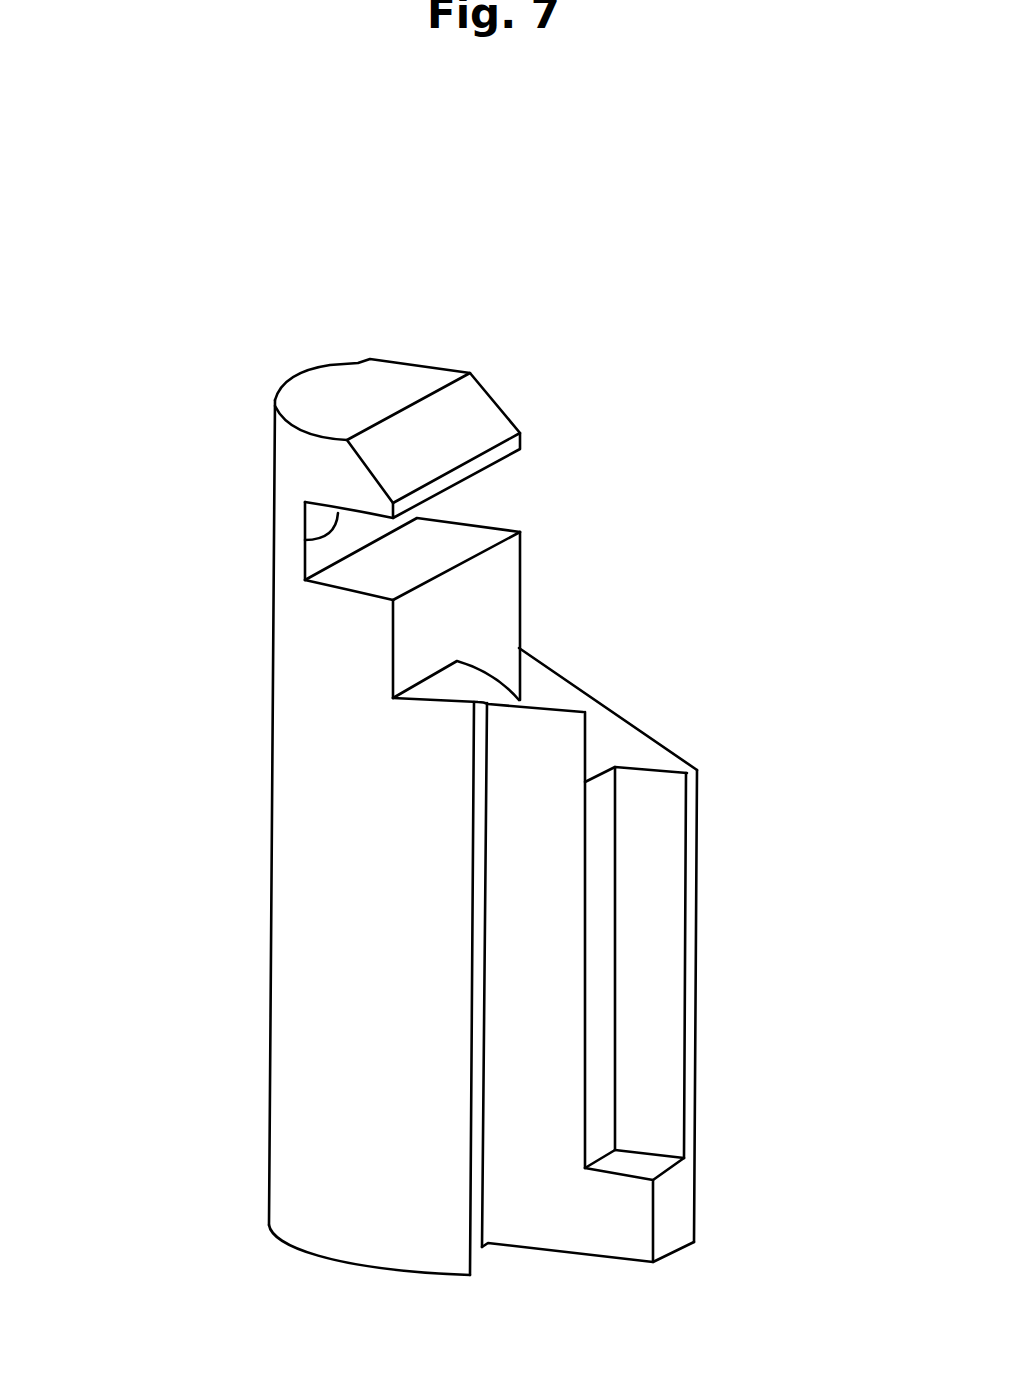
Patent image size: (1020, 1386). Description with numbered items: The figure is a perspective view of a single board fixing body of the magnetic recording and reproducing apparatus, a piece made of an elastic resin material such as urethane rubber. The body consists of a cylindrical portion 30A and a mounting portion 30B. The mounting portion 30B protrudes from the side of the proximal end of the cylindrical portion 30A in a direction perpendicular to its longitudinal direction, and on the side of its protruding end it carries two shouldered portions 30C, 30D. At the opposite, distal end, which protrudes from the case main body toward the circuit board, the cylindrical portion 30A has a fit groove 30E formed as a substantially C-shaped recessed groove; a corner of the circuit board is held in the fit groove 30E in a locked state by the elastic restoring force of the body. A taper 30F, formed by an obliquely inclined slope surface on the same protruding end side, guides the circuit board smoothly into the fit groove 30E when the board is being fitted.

The cylindrical portion 30A is at (353, 852).
The mounting portion 30B is at (673, 1213).
The shouldered portion 30C is at (527, 835).
The shouldered portion 30D is at (652, 907).
The fit groove 30E is at (305, 540).
The taper 30F is at (473, 418).